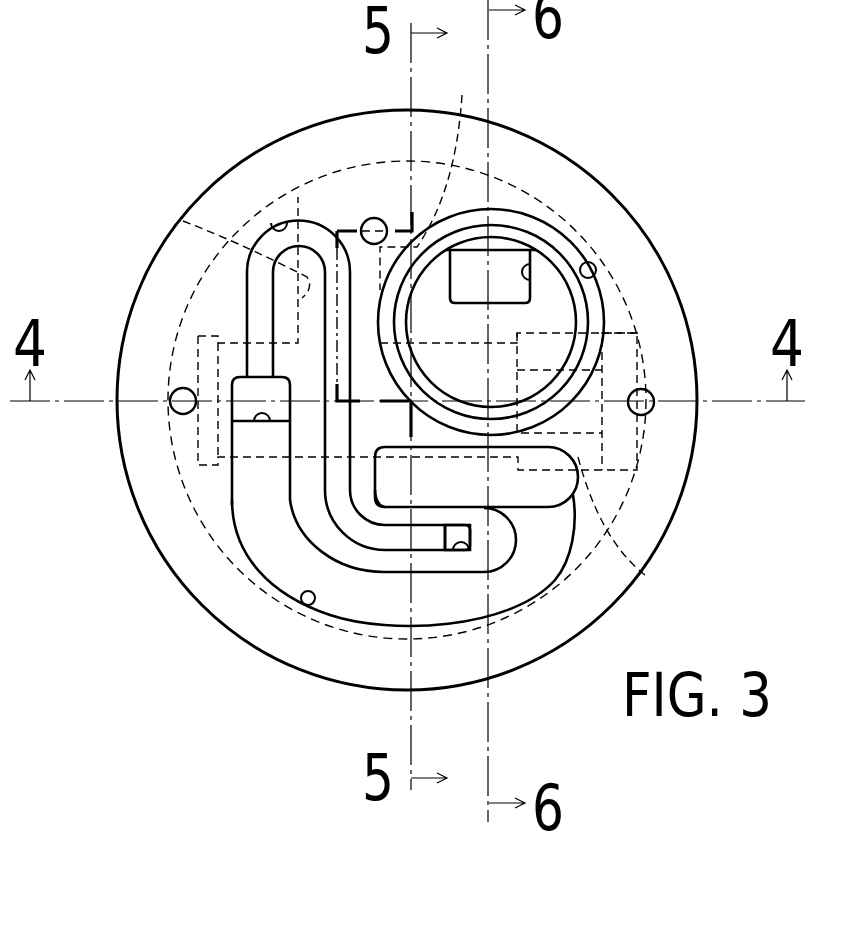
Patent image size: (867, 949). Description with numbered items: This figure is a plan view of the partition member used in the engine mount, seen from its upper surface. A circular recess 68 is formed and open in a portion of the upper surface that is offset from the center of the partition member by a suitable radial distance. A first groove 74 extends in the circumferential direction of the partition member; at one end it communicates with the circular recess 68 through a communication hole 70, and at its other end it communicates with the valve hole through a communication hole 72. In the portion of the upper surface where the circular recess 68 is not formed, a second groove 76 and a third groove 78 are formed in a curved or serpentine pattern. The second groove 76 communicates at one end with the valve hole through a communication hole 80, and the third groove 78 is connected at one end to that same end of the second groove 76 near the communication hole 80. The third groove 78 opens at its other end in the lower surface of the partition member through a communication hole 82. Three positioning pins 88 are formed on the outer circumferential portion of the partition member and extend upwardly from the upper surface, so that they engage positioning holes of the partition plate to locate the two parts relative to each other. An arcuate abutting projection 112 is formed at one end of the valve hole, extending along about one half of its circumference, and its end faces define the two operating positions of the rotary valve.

The circular recess 68 is at (592, 262).
The communication hole 70 is at (533, 252).
The communication hole 72 is at (183, 221).
The first groove 74 is at (429, 176).
The second groove 76 is at (310, 606).
The third groove 78 is at (283, 220).
The communication hole 80 is at (261, 414).
The communication hole 82 is at (457, 552).
The positioning pins 88 is at (373, 218).
The abutting projection 112 is at (645, 575).